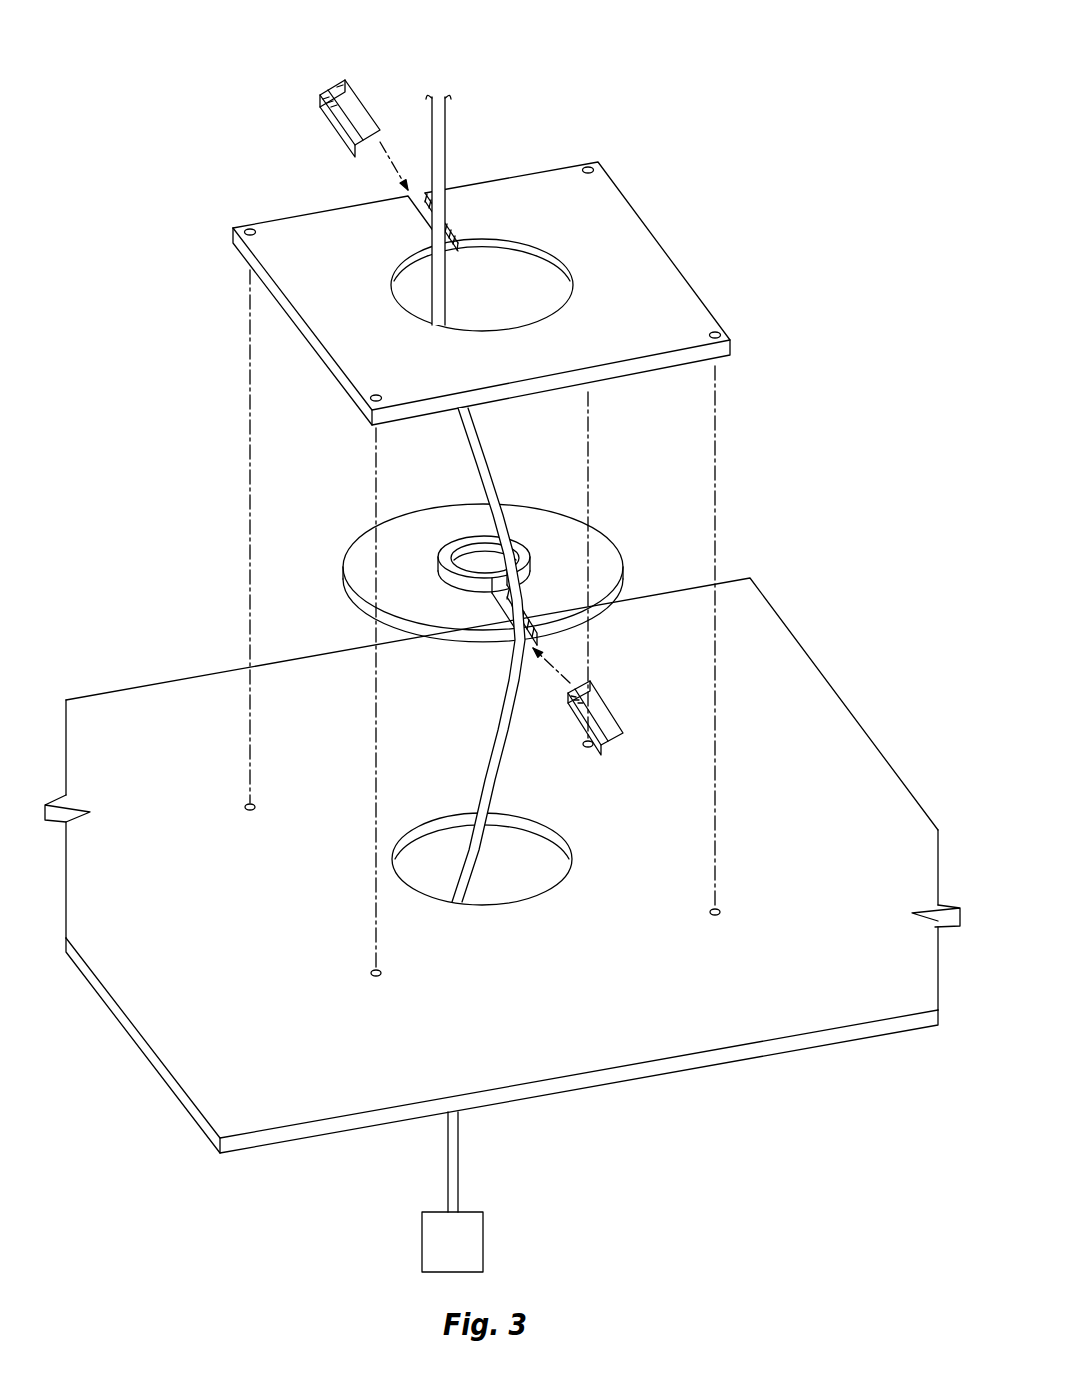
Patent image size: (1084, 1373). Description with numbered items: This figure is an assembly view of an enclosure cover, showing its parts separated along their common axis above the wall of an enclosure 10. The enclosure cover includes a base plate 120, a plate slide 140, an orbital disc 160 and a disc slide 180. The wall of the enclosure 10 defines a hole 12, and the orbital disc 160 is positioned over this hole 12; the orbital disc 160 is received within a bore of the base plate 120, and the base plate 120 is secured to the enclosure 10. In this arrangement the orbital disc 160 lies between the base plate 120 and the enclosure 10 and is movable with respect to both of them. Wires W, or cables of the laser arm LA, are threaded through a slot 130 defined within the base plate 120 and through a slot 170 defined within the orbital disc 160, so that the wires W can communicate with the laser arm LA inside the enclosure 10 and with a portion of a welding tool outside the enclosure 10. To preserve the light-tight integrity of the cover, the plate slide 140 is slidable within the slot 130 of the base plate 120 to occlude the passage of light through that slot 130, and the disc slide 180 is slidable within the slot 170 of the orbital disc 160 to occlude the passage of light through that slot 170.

The enclosure 10 is at (788, 1020).
The hole 12 is at (537, 863).
The base plate 120 is at (648, 247).
The slot 130 is at (450, 245).
The plate slide 140 is at (367, 105).
The orbital disc 160 is at (612, 538).
The slot 170 is at (502, 608).
The disc slide 180 is at (612, 708).
The wires W is at (446, 135).
The laser arm LA is at (483, 1243).